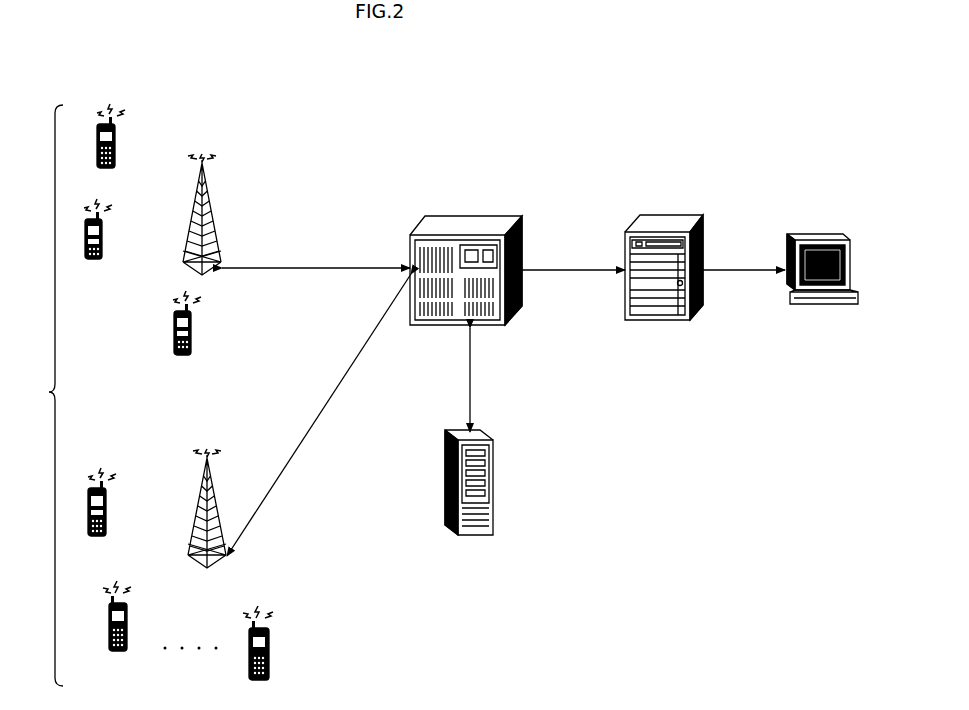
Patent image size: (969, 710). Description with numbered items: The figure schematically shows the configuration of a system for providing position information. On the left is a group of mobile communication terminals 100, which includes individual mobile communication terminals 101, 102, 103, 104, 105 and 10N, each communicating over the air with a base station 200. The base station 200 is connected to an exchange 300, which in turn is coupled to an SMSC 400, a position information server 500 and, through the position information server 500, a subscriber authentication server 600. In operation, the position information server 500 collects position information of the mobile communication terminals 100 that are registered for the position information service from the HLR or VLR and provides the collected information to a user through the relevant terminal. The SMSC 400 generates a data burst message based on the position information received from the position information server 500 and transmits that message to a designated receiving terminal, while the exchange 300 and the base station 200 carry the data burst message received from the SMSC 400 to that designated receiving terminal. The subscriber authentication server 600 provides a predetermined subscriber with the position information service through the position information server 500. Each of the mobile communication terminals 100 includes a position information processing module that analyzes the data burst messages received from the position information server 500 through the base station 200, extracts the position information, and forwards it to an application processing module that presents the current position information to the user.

The mobile communication terminals 100 is at (41, 395).
The mobile communication terminal 101 is at (116, 137).
The mobile communication terminal 102 is at (103, 250).
The mobile communication terminal 103 is at (192, 347).
The mobile communication terminal 104 is at (107, 520).
The mobile communication terminal 105 is at (128, 621).
The mobile communication terminal 10N is at (270, 661).
The base station 200 is at (215, 232).
The exchange 300 is at (522, 232).
The SMSC 400 is at (494, 484).
The position information server 500 is at (703, 232).
The subscriber authentication server 600 is at (858, 258).